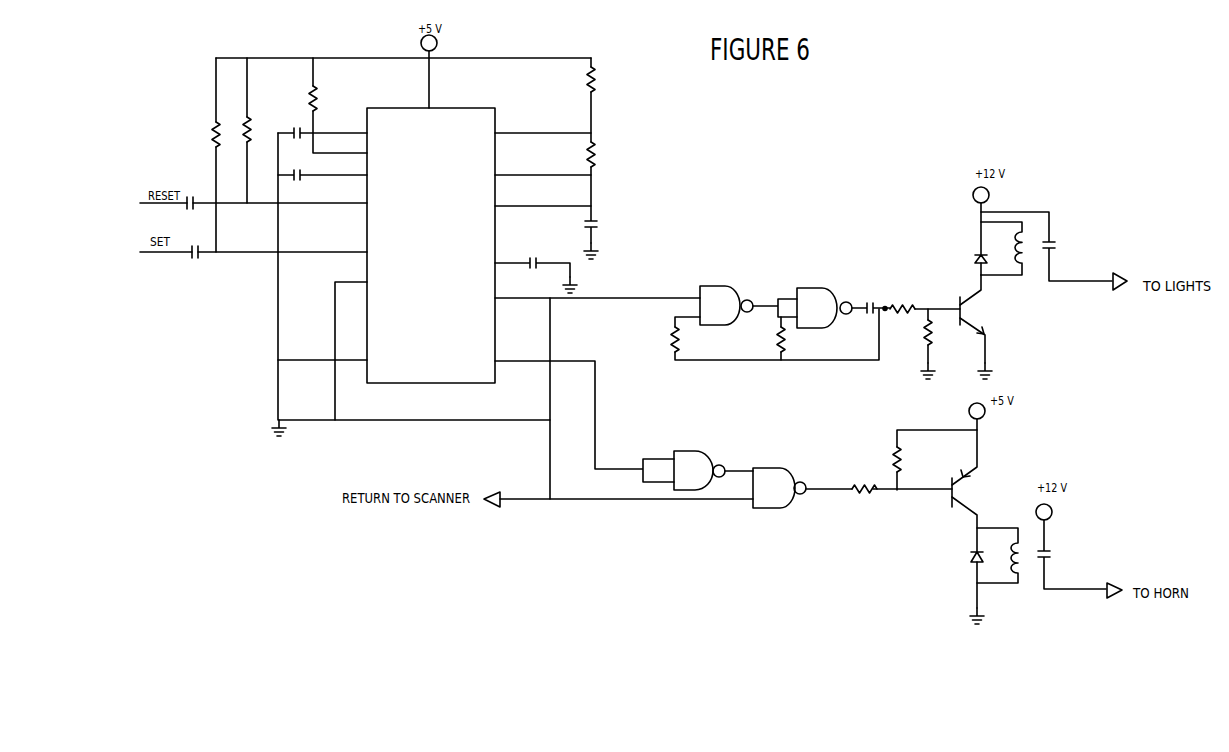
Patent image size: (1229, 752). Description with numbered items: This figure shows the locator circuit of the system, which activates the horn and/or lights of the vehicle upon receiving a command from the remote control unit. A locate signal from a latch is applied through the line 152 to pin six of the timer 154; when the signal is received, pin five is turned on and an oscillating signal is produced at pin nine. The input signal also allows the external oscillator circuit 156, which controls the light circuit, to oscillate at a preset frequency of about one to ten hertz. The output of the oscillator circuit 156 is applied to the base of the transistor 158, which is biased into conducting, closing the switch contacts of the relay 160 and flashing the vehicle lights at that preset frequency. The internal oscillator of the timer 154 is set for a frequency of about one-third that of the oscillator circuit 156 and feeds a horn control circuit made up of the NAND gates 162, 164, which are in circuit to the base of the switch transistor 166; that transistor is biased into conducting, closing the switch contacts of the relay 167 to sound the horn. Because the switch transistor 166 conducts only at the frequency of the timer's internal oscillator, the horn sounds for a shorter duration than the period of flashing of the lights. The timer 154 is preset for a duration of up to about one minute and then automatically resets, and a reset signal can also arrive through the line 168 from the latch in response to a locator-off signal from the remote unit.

The line 168 is at (194, 199).
The line 152 is at (166, 256).
The timer 154 is at (446, 378).
The external oscillator circuit 156 is at (768, 287).
The transistor 158 is at (978, 310).
The relay 160 is at (1040, 237).
The NAND gate 162 is at (688, 465).
The NAND gate 164 is at (775, 480).
The switch transistor 166 is at (977, 489).
The relay 167 is at (1028, 547).